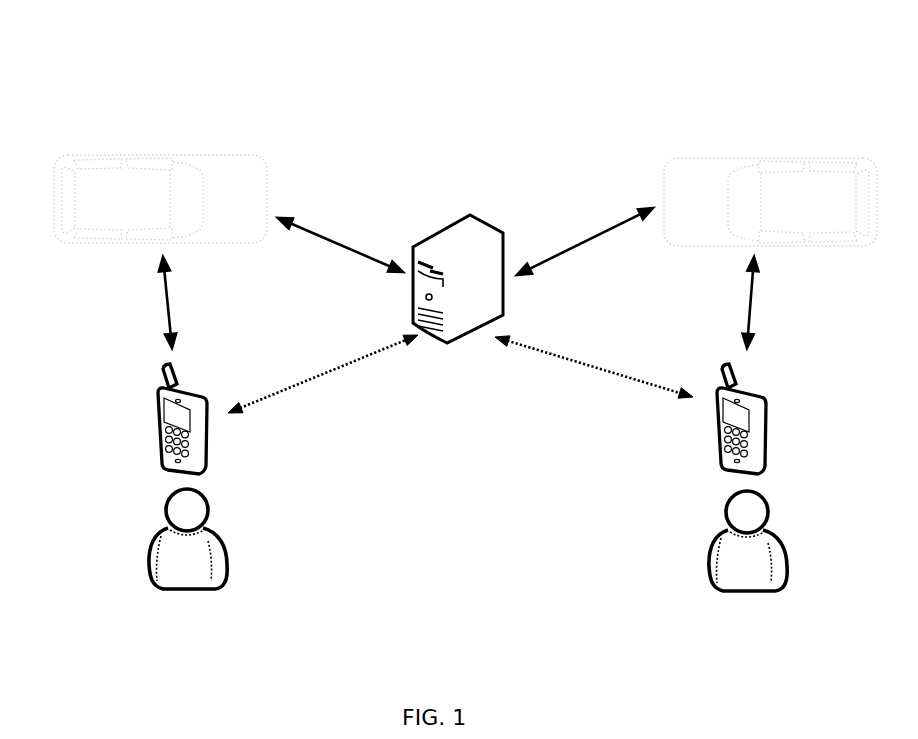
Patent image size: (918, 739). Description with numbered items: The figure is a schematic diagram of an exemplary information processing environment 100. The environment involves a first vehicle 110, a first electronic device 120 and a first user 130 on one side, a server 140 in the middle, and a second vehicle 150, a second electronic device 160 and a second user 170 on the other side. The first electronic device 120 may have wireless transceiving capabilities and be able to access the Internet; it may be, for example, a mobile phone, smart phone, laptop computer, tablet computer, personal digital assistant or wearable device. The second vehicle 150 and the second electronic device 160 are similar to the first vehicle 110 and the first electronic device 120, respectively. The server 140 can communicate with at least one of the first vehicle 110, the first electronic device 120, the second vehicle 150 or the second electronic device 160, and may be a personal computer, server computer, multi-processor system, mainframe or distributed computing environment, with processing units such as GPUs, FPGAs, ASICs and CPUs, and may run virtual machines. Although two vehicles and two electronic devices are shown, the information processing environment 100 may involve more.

The information processing environment 100 is at (248, 46).
The first vehicle 110 is at (104, 158).
The first electronic device 120 is at (158, 424).
The first user 130 is at (160, 530).
The server 140 is at (452, 226).
The second vehicle 150 is at (725, 158).
The second electronic device 160 is at (717, 424).
The second user 170 is at (719, 531).